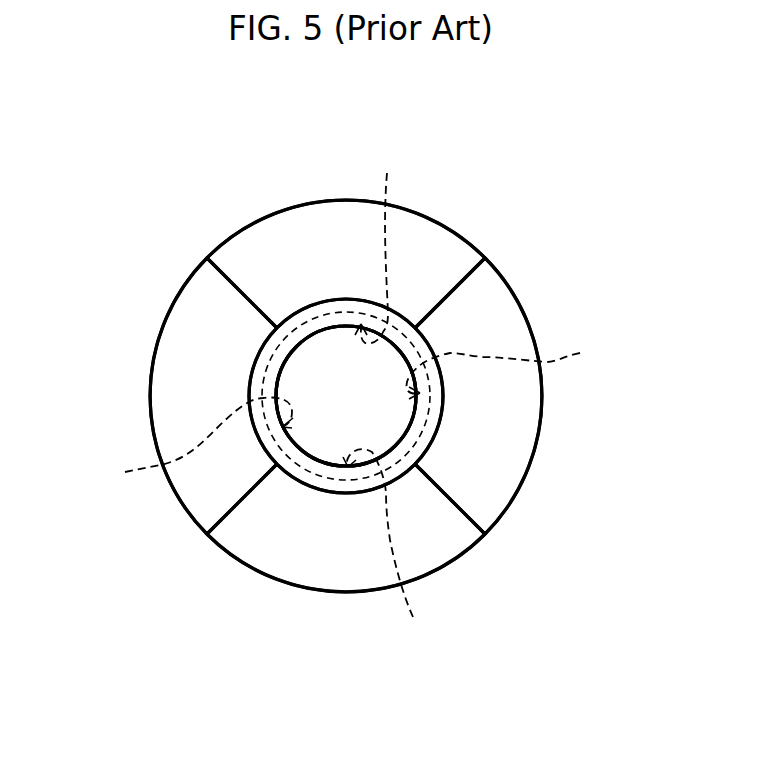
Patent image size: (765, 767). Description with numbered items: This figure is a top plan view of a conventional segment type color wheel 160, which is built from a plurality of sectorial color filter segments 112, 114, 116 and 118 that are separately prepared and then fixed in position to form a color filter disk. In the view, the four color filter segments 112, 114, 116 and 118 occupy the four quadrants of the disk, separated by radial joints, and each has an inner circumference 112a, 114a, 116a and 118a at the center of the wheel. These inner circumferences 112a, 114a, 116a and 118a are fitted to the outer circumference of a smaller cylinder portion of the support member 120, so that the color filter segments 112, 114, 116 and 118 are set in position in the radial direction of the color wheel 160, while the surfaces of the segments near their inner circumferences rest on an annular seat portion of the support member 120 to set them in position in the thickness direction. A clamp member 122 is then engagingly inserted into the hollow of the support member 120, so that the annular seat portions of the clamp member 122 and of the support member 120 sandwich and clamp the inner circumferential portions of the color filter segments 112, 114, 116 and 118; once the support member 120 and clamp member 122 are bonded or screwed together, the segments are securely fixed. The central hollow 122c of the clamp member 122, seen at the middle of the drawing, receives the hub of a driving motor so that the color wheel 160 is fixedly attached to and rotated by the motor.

The color filter segment 112 is at (170, 362).
The inner circumference of color filter segment 112a is at (175, 444).
The color filter segment 114 is at (323, 225).
The inner circumference of color filter segment 114a is at (395, 241).
The color filter segment 116 is at (515, 445).
The inner circumference of color filter segment 116a is at (527, 369).
The color filter segment 118 is at (303, 568).
The inner circumference of color filter segment 118a is at (401, 554).
The support member 120 is at (297, 307).
The clamp member 122 is at (346, 396).
The hollow of clamp member 122c is at (319, 334).
The segment type color wheel 160 is at (490, 232).